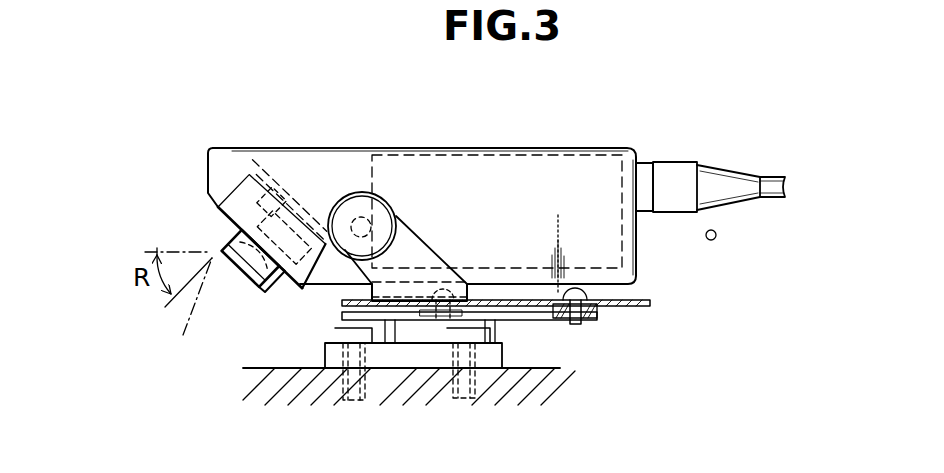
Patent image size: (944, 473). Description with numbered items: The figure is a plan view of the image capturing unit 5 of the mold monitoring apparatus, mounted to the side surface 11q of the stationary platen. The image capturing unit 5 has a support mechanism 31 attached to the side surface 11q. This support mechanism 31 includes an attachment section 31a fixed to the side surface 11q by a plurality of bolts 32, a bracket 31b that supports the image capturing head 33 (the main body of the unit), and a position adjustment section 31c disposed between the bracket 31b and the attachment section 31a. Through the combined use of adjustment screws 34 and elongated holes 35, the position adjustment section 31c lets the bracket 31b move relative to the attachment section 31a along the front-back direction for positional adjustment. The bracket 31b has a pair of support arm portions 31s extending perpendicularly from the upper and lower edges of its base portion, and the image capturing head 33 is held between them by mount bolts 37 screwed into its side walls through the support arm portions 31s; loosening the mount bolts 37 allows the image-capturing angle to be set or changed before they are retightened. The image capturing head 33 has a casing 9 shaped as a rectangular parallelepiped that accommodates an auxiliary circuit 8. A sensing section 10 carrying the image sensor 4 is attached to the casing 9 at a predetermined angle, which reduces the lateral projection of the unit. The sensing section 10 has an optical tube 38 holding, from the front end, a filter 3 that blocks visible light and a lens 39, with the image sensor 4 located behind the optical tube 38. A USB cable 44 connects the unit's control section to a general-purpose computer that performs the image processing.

The filter 3 is at (224, 263).
The image sensor 4 is at (262, 203).
The image capturing unit 5 is at (592, 124).
The auxiliary circuit 8 is at (628, 242).
The casing 9 is at (320, 148).
The sensing section 10 is at (271, 291).
The side surface of stationary platen 11q is at (560, 365).
The support mechanism 31 is at (667, 318).
The attachment section 31a is at (398, 371).
The bracket 31b is at (652, 298).
The position adjustment section 31c is at (606, 322).
The support arm portions 31s is at (414, 235).
The bolts 32 is at (343, 362).
The image capturing head 33 is at (492, 147).
The adjustment screws 34 is at (436, 296).
The elongated holes 35 is at (548, 300).
The mount bolts 37 is at (357, 192).
The optical tube 38 is at (222, 250).
The lens 39 is at (182, 311).
The USB cable 44 is at (733, 168).